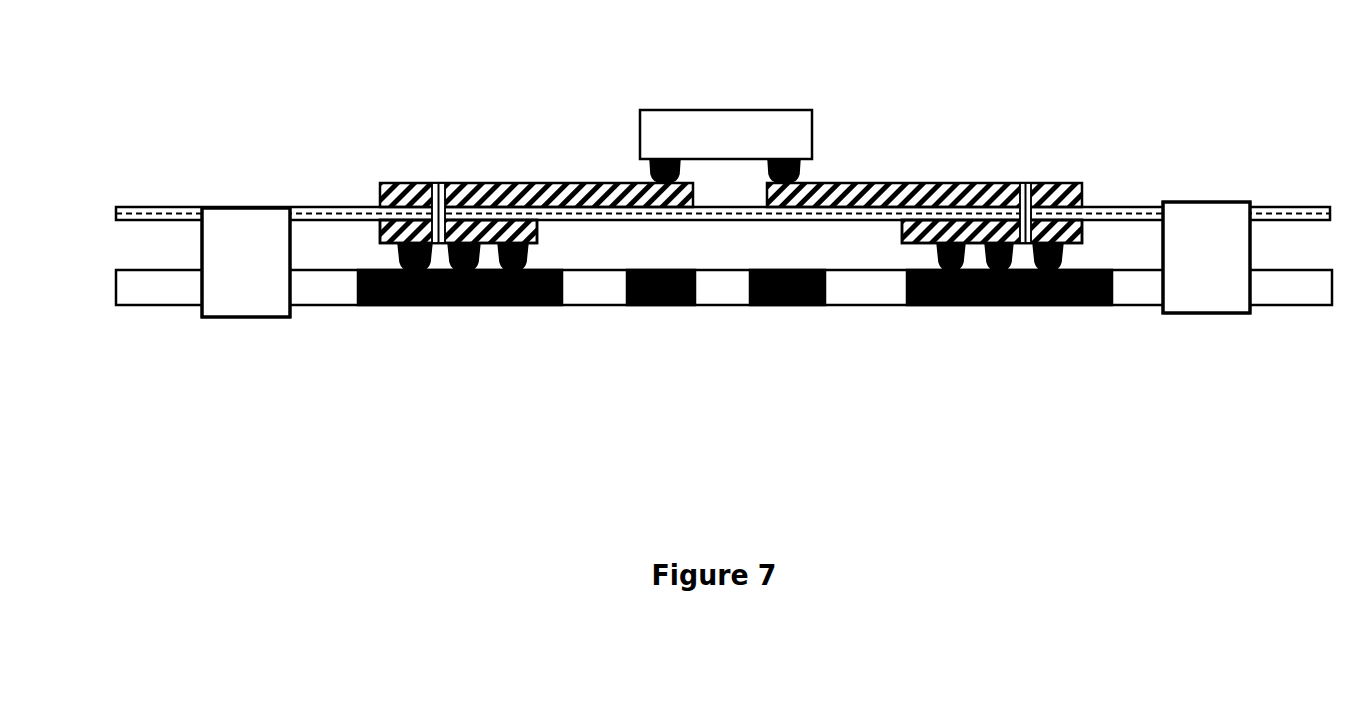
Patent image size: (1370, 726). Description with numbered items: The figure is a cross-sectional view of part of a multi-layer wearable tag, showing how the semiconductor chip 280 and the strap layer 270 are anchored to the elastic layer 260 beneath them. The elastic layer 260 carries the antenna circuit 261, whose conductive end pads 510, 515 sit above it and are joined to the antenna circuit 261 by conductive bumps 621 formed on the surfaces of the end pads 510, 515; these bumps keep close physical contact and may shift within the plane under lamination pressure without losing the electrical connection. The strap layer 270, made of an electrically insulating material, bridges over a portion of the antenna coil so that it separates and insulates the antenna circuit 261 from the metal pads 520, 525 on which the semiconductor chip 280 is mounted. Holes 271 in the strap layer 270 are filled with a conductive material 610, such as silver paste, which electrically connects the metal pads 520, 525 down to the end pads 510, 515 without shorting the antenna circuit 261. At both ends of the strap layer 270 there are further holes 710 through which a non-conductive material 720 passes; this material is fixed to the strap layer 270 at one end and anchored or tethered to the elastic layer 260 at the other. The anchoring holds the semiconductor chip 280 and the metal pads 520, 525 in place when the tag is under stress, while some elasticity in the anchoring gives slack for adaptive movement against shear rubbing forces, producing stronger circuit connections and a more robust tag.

The elastic layer 260 is at (1280, 282).
The antenna circuit 261 is at (470, 293).
The strap layer 270 is at (1270, 217).
The holes 271 is at (437, 193).
The semiconductor chip 280 is at (730, 132).
The conductive end pad 510 is at (405, 235).
The conductive end pad 515 is at (1072, 235).
The metal pad 520 is at (580, 190).
The metal pad 525 is at (867, 190).
The conductive material 610 is at (425, 195).
The conductive bumps 621 is at (527, 260).
The holes 710 is at (217, 205).
The non-conductive material 720 is at (243, 280).